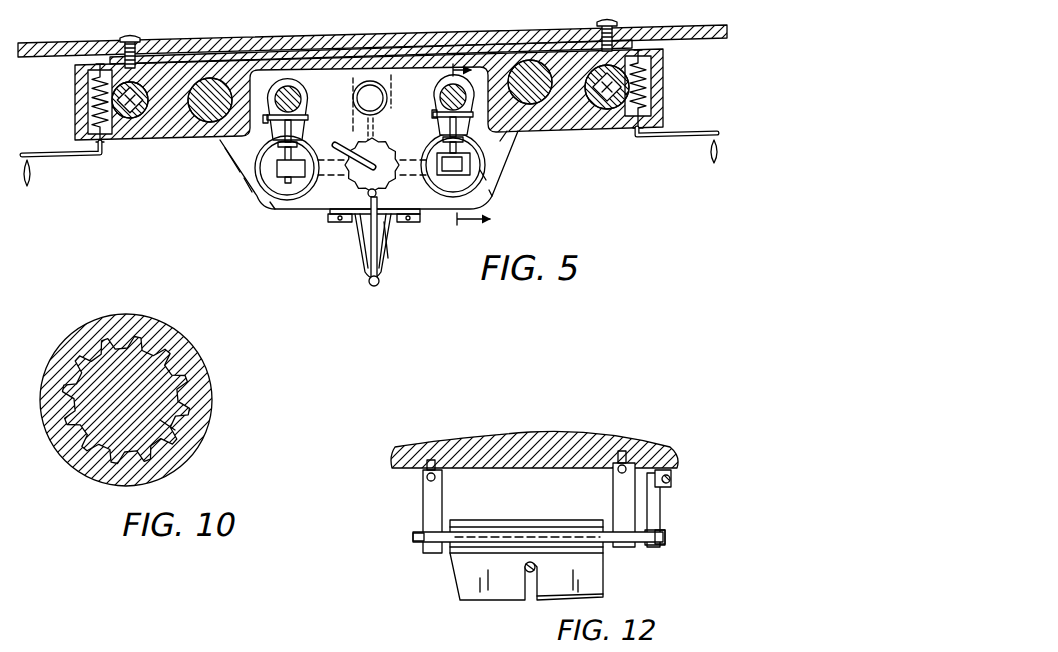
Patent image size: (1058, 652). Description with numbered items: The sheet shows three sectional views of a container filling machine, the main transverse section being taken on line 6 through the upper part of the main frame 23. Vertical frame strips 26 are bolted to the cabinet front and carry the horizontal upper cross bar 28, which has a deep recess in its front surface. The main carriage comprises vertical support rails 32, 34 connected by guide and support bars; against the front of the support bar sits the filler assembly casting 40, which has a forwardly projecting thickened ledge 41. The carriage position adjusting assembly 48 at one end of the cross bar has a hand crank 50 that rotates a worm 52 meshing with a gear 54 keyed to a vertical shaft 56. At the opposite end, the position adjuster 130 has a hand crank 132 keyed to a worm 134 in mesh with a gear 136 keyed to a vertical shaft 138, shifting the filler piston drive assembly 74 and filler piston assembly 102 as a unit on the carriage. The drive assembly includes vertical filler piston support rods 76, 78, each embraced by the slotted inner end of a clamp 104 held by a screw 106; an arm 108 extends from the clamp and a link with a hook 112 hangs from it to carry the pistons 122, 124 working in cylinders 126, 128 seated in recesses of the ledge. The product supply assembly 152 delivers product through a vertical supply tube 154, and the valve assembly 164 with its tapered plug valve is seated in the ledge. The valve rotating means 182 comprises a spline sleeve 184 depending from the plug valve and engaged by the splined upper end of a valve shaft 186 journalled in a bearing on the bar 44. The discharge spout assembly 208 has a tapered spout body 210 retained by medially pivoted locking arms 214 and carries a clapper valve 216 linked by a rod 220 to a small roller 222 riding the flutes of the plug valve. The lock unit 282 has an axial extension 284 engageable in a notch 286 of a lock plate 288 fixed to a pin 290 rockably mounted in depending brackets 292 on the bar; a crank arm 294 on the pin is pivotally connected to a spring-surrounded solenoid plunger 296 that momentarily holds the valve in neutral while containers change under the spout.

In FIG. 5, the section line 6 is at (483, 147).
In FIG. 5, the main frame 23 is at (247, 56).
In FIG. 5, the frame strips 26 is at (128, 41).
In FIG. 5, the upper cross bar 28 is at (160, 142).
In FIG. 5, the support rail 32 is at (208, 125).
In FIG. 5, the support rail 34 is at (530, 60).
In FIG. 5, the filler assembly casting 40 is at (240, 172).
In FIG. 5, the ledge 41 is at (250, 192).
In FIG. 5, the carriage position adjusting assembly 48 is at (691, 147).
In FIG. 5, the hand crank 50 is at (660, 140).
In FIG. 5, the worm 52 is at (665, 78).
In FIG. 5, the gear 54 is at (607, 112).
In FIG. 5, the vertical shaft 56 is at (590, 66).
In FIG. 5, the filler piston drive assembly 74 is at (300, 80).
In FIG. 5, the filler piston support rod 76 is at (285, 87).
In FIG. 5, the filler piston support rod 78 is at (448, 81).
In FIG. 5, the filler piston assembly 102 is at (295, 84).
In FIG. 5, the clamp 104 is at (304, 121).
In FIG. 5, the screw 106 is at (265, 123).
In FIG. 5, the arm 108 is at (278, 202).
In FIG. 5, the hook 112 is at (265, 205).
In FIG. 5, the piston 122 is at (290, 205).
In FIG. 5, the piston 124 is at (472, 178).
In FIG. 5, the cylinder 126 is at (298, 190).
In FIG. 5, the cylinder 128 is at (500, 144).
In FIG. 5, the position adjuster 130 is at (58, 160).
In FIG. 5, the hand crank 132 is at (27, 190).
In FIG. 5, the worm 134 is at (88, 94).
In FIG. 5, the gear 136 is at (162, 62).
In FIG. 5, the shaft 138 is at (132, 121).
In FIG. 5, the product supply assembly 152 is at (376, 80).
In FIG. 5, the supply tube 154 is at (368, 80).
In FIG. 5, the valve assembly 164 is at (386, 150).
In FIG. 10, the valve rotating means 182 is at (216, 386).
In FIG. 10, the spline sleeve 184 is at (142, 326).
In FIG. 10, the valve shaft 186 is at (172, 430).
In FIG. 5, the discharge spout assembly 208 is at (360, 272).
In FIG. 5, the spout body 210 is at (360, 252).
In FIG. 5, the locking arms 214 is at (334, 223).
In FIG. 5, the clapper valve 216 is at (378, 290).
In FIG. 5, the rod 220 is at (386, 258).
In FIG. 5, the roller 222 is at (378, 193).
In FIG. 12, the bar 44 is at (477, 446).
In FIG. 12, the lock unit 282 is at (451, 592).
In FIG. 12, the axial extension 284 is at (565, 563).
In FIG. 12, the notch 286 is at (528, 593).
In FIG. 12, the lock plate 288 is at (598, 590).
In FIG. 12, the pin 290 is at (415, 538).
In FIG. 12, the brackets 292 is at (423, 503).
In FIG. 12, the crank arm 294 is at (656, 507).
In FIG. 12, the solenoid plunger 296 is at (669, 475).